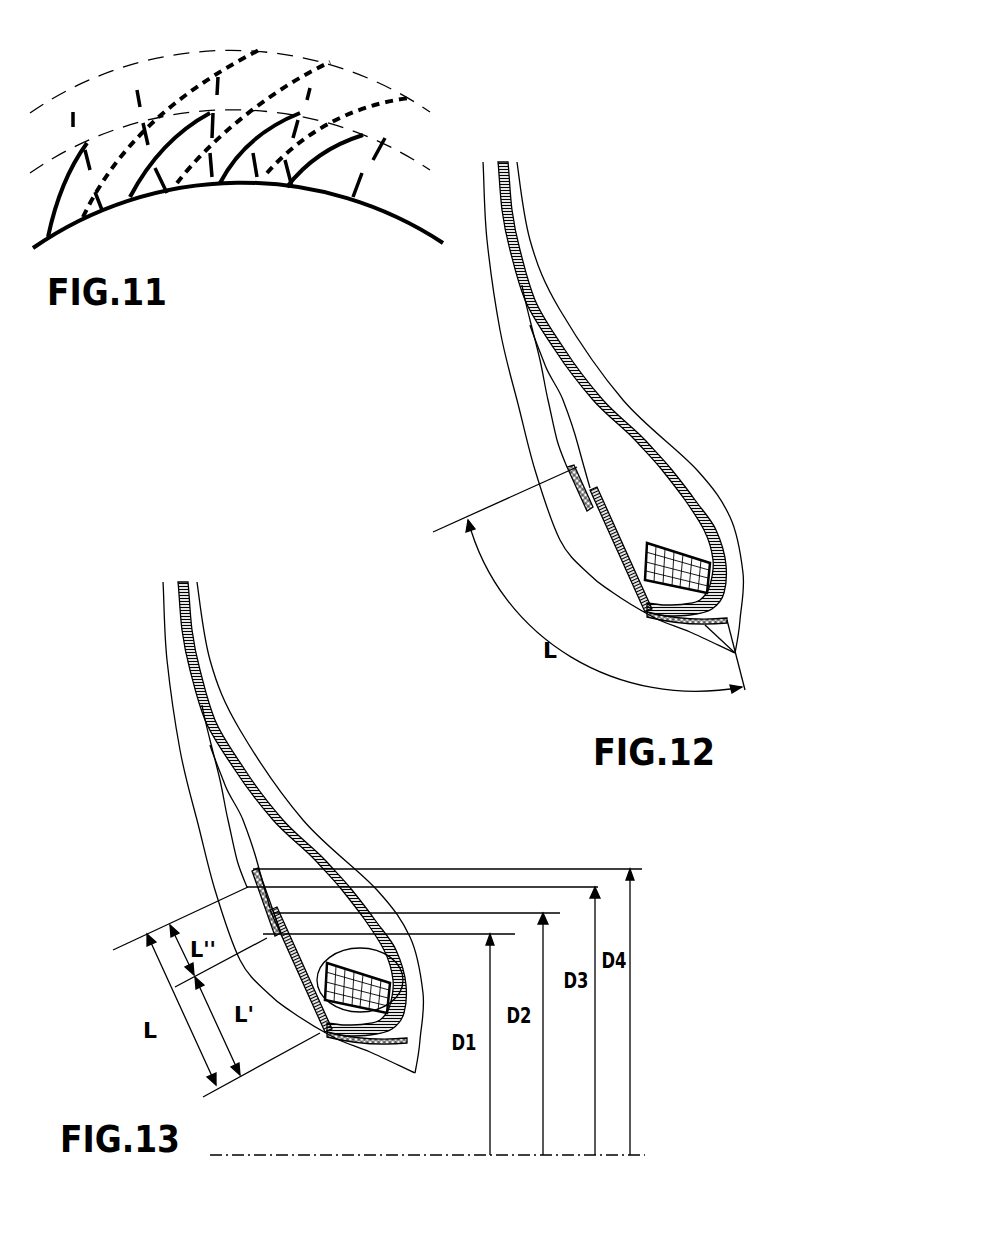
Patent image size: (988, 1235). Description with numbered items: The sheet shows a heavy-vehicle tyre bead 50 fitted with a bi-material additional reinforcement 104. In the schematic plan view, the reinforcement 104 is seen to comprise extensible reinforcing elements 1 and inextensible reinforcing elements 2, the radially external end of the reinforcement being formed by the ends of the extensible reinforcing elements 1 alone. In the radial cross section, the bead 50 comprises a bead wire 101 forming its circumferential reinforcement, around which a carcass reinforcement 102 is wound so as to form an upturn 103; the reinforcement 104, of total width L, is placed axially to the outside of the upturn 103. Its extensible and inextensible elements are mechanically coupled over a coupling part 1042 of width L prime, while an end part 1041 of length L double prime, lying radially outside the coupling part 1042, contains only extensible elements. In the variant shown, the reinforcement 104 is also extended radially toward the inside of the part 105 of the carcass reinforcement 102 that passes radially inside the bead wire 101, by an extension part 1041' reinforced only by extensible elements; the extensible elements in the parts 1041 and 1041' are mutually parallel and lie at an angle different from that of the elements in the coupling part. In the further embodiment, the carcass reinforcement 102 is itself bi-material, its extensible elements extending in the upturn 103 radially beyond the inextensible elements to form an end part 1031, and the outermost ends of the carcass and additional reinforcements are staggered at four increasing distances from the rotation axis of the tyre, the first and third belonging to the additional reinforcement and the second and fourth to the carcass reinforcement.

In FIG. 11, the extensible reinforcing elements 1 is at (220, 63).
In FIG. 11, the inextensible reinforcing elements 2 is at (253, 167).
In FIG. 11, the bead 50 is at (330, 177).
In FIG. 12, the bead 50 is at (617, 490).
In FIG. 12, the bead wire 101 is at (675, 570).
In FIG. 13, the bead wire 101 is at (403, 995).
In FIG. 12, the carcass reinforcement 102 is at (647, 443).
In FIG. 13, the carcass reinforcement 102 is at (250, 787).
In FIG. 11, the upturn 103 is at (60, 123).
In FIG. 12, the upturn 103 is at (617, 530).
In FIG. 13, the upturn 103 is at (299, 950).
In FIG. 13, the end part 1031 is at (262, 868).
In FIG. 11, the reinforcement 104 is at (363, 107).
In FIG. 12, the reinforcement 104 is at (630, 592).
In FIG. 13, the reinforcement 104 is at (247, 888).
In FIG. 12, the end part 1041 is at (522, 475).
In FIG. 13, the end part 1041 is at (194, 885).
In FIG. 12, the extension part 1041' is at (773, 671).
In FIG. 12, the coupling part 1042 is at (647, 612).
In FIG. 13, the coupling part 1042 is at (320, 1030).
In FIG. 12, the part of the carcass reinforcement 105 is at (728, 618).